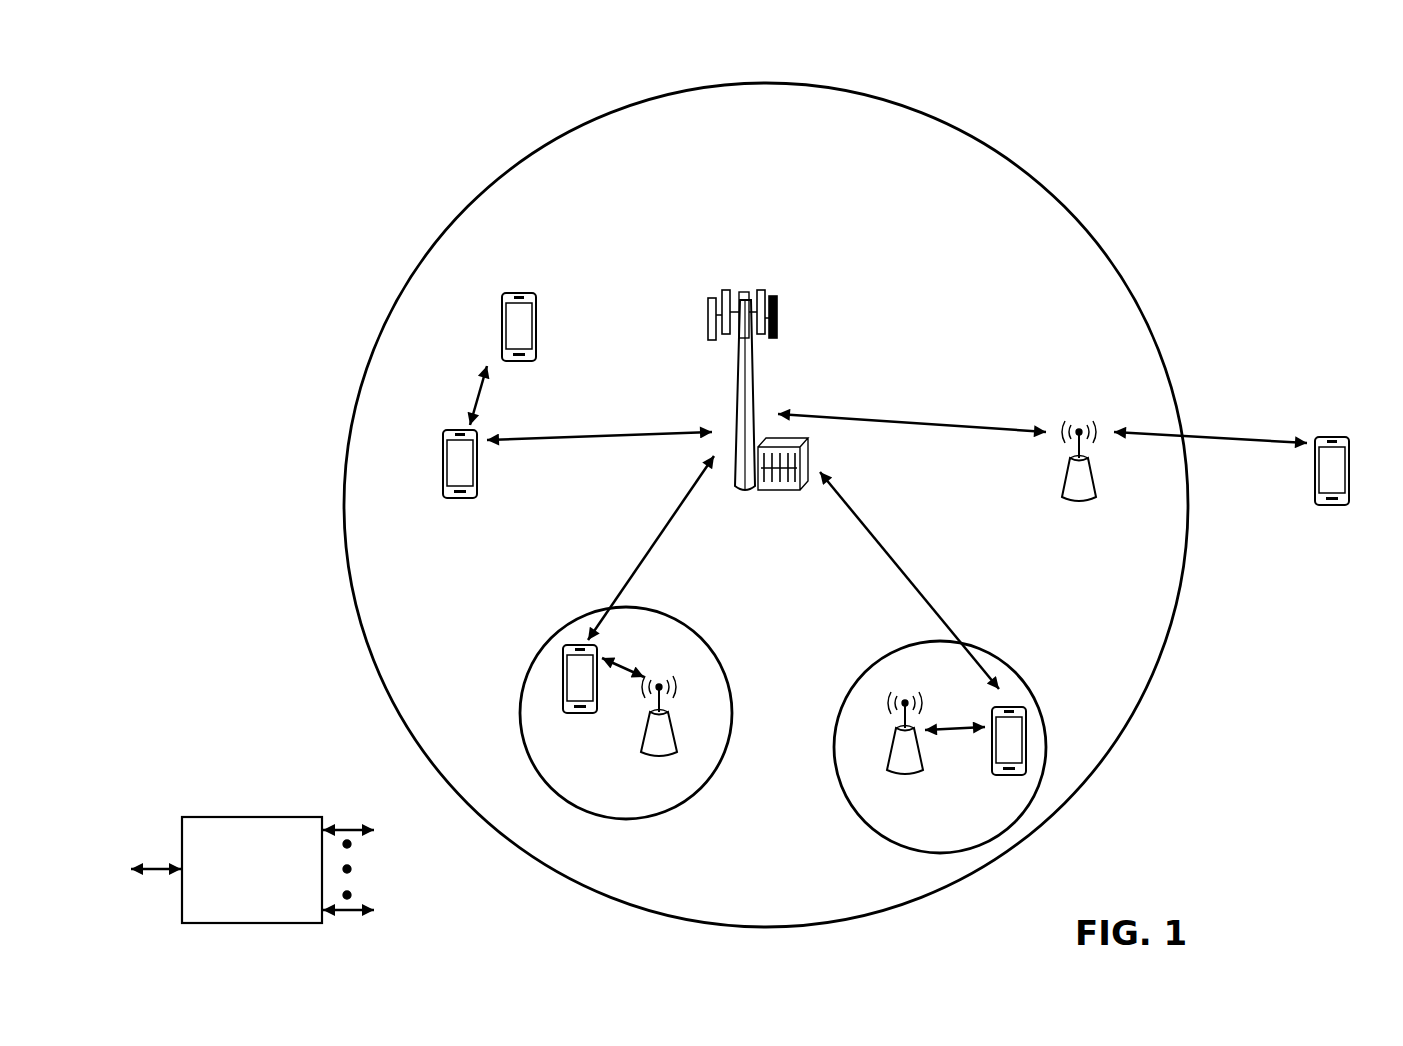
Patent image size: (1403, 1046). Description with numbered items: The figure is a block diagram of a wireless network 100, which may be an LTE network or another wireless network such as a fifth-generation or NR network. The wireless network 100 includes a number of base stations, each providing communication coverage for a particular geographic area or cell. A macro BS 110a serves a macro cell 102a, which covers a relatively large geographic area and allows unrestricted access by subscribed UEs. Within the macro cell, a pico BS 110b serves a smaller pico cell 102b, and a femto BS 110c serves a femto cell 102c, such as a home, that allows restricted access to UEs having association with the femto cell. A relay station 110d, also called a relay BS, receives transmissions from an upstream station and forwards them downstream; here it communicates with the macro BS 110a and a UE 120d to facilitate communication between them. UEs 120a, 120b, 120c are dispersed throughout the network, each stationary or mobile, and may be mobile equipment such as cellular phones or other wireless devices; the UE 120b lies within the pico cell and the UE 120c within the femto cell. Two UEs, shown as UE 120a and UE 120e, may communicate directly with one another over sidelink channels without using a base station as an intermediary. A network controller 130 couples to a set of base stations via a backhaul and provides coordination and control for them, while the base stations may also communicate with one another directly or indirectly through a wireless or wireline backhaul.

The wireless network 100 is at (233, 78).
The macro cell 102a is at (1043, 192).
The pico cell 102b is at (720, 652).
The femto cell 102c is at (878, 662).
The macro BS 110a is at (751, 289).
The pico BS 110b is at (682, 744).
The femto BS 110c is at (890, 758).
The relay station 110d is at (1081, 424).
The UE 120a is at (443, 462).
The UE 120b is at (566, 713).
The UE 120c is at (992, 775).
The UE 120d is at (1343, 437).
The UE 120e is at (502, 316).
The network controller 130 is at (250, 817).